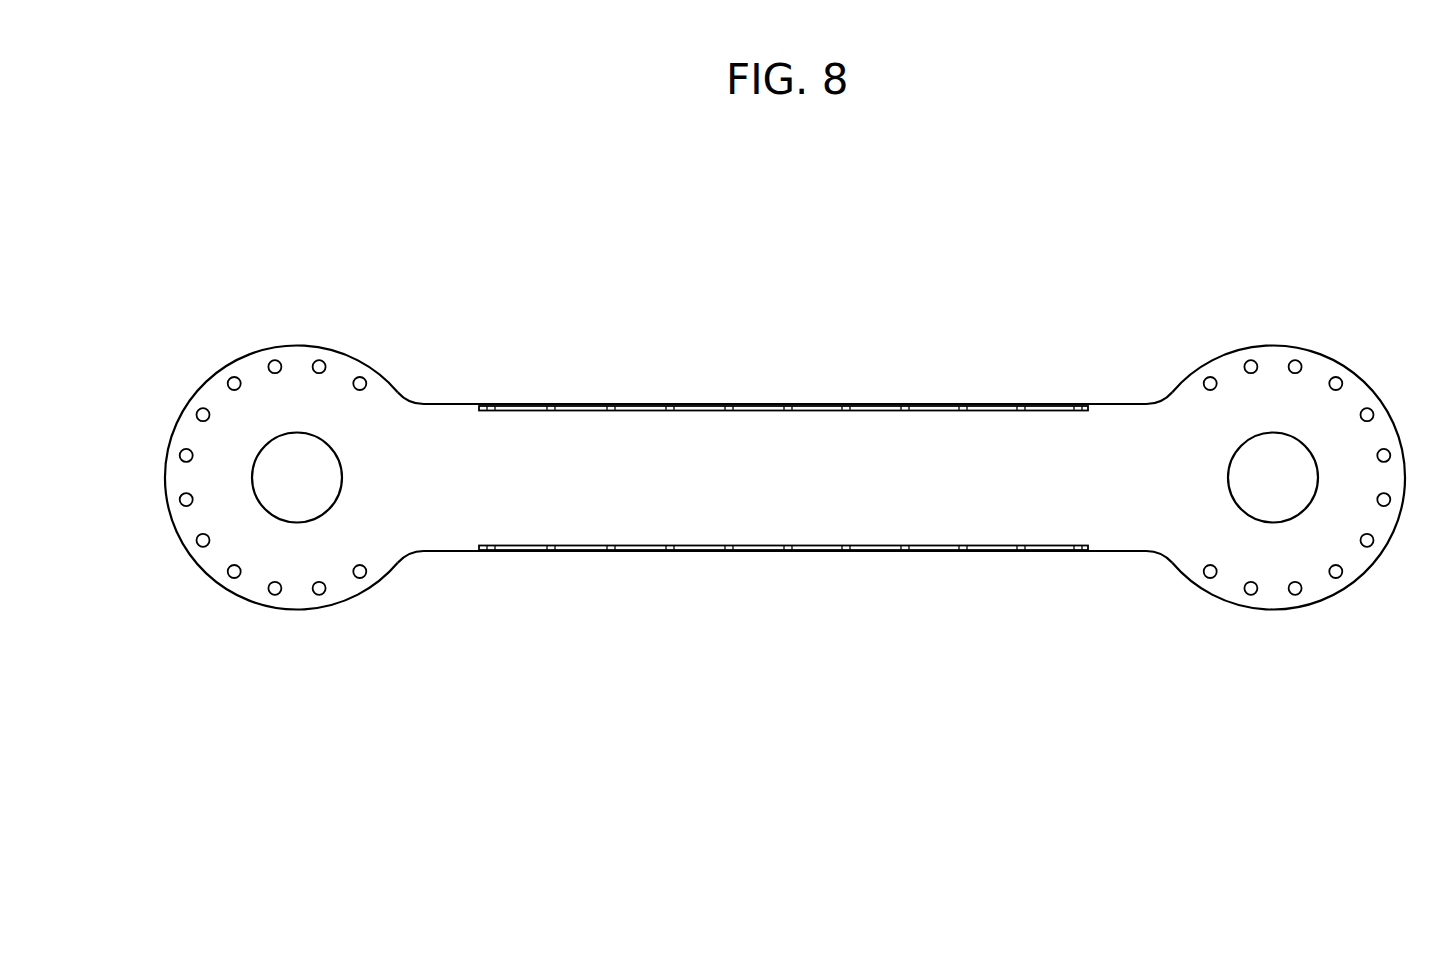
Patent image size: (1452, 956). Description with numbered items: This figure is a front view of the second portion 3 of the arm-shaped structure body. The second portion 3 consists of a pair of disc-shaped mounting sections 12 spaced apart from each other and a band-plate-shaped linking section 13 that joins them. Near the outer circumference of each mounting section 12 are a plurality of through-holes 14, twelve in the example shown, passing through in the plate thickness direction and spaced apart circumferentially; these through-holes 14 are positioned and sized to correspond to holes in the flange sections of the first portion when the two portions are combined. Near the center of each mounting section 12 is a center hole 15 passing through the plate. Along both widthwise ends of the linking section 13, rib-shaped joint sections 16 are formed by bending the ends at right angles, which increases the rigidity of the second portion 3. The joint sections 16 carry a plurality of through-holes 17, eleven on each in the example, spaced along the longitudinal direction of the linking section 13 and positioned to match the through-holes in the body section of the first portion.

The second portion 3 is at (611, 300).
The mounting section 12 is at (300, 325).
The linking section 13 is at (756, 385).
The through-hole 14 is at (236, 578).
The center hole 15 is at (343, 471).
The joint section 16 is at (870, 405).
The through-hole 17 is at (665, 405).